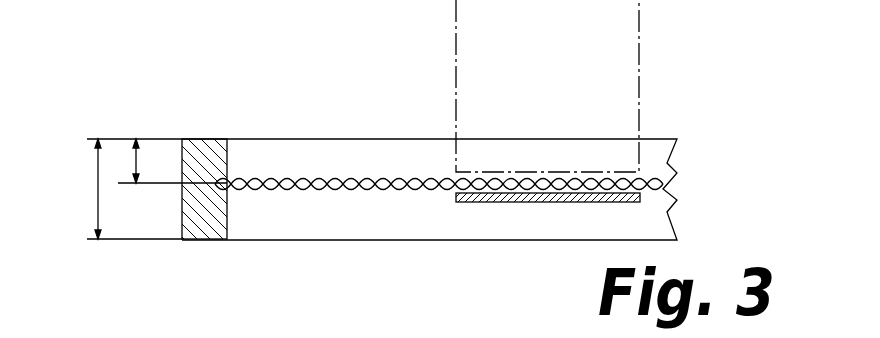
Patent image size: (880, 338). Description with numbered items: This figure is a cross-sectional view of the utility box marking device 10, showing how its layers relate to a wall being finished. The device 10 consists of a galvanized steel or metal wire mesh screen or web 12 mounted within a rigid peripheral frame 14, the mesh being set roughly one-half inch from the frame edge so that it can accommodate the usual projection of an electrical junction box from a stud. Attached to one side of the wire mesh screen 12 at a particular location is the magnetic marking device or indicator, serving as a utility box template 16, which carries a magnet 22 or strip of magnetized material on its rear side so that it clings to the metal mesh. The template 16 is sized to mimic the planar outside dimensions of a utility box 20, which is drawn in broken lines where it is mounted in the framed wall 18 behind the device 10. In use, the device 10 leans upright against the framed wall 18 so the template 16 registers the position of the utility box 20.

The utility box marking device 10 is at (127, 98).
The wire mesh screen or web 12 is at (376, 184).
The rigid peripheral frame 14 is at (205, 222).
The magnetic marking device or indicator or utility box template 16 is at (605, 202).
The framed wall 18 is at (490, 337).
The utility box 20 is at (456, 62).
The magnet 22 is at (588, 180).